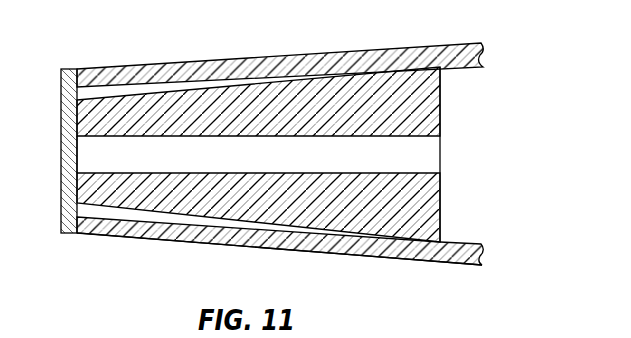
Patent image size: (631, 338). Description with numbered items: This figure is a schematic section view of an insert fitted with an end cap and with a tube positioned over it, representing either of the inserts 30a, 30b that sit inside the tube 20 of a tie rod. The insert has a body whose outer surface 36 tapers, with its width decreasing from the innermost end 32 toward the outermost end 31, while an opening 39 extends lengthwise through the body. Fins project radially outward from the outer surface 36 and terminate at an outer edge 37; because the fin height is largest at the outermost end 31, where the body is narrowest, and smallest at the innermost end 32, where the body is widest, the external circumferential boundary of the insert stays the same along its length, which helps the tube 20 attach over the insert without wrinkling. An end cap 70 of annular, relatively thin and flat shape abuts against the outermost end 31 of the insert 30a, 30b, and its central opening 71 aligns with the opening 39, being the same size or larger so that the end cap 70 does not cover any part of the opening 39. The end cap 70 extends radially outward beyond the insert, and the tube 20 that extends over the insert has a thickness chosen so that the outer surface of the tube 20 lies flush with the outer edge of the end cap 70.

The tube 20 is at (325, 243).
The insert 30a is at (466, 95).
The insert 30b is at (265, 153).
The outermost end 31 is at (78, 192).
The innermost end 32 is at (440, 208).
The outer surface 36 is at (210, 68).
The outer edge 37 is at (192, 82).
The opening 39 is at (417, 160).
The end cap 70 is at (61, 102).
The central opening 71 is at (67, 154).